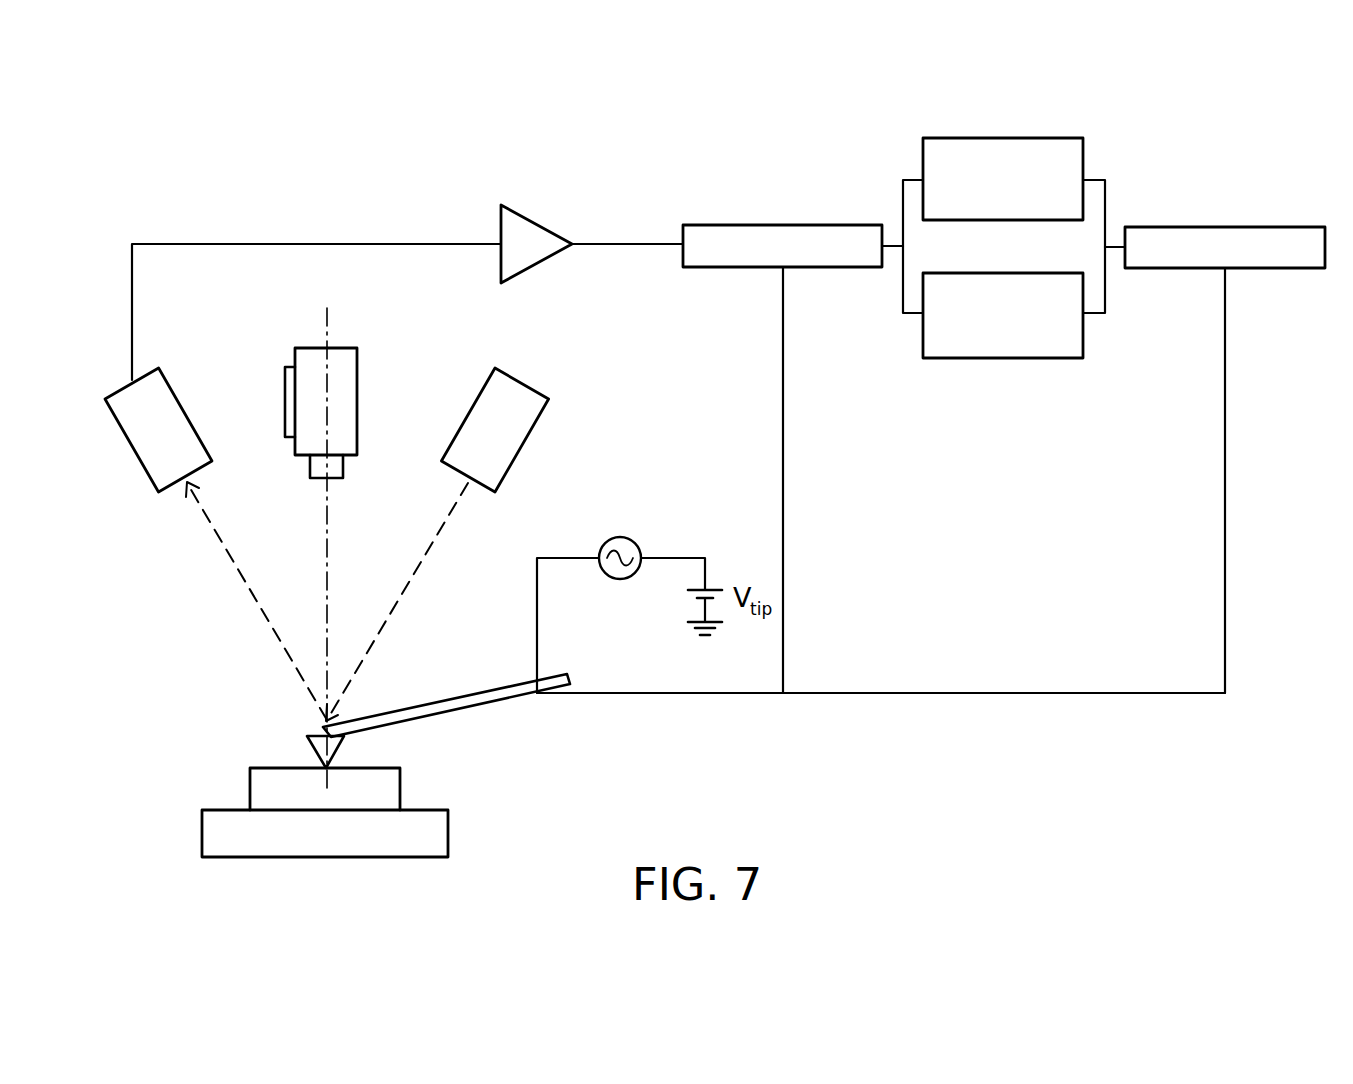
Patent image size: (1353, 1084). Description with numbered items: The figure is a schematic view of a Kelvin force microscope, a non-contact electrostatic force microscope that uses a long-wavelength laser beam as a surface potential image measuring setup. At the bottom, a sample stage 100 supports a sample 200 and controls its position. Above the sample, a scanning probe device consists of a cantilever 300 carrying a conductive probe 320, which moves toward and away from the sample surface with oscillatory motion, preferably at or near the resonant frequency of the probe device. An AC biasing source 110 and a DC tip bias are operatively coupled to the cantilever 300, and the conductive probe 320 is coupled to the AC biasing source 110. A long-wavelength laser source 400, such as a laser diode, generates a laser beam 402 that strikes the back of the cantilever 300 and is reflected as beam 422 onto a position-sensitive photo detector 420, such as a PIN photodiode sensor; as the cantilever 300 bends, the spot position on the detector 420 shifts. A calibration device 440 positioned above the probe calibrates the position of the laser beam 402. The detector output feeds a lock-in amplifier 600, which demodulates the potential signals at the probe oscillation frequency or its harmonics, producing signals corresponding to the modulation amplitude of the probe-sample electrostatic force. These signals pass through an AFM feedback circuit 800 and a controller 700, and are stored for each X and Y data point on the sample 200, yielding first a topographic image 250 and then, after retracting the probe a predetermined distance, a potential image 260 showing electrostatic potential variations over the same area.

The sample stage 100 is at (202, 830).
The sample 200 is at (250, 790).
The cantilever 300 is at (447, 707).
The conductive probe 320 is at (313, 753).
The long-wavelength laser source 400 is at (522, 398).
The laser beam 402 is at (403, 587).
The position-sensitive photo detector 420 is at (145, 453).
The reflected laser beam 422 is at (247, 585).
The calibration device 440 is at (347, 360).
The lock-in amplifier 600 is at (537, 220).
The AFM feedback circuit 800 is at (695, 223).
The topographic image 250 is at (933, 138).
The potential image 260 is at (933, 358).
The controller 700 is at (1135, 225).
The AC biasing source 110 is at (620, 537).